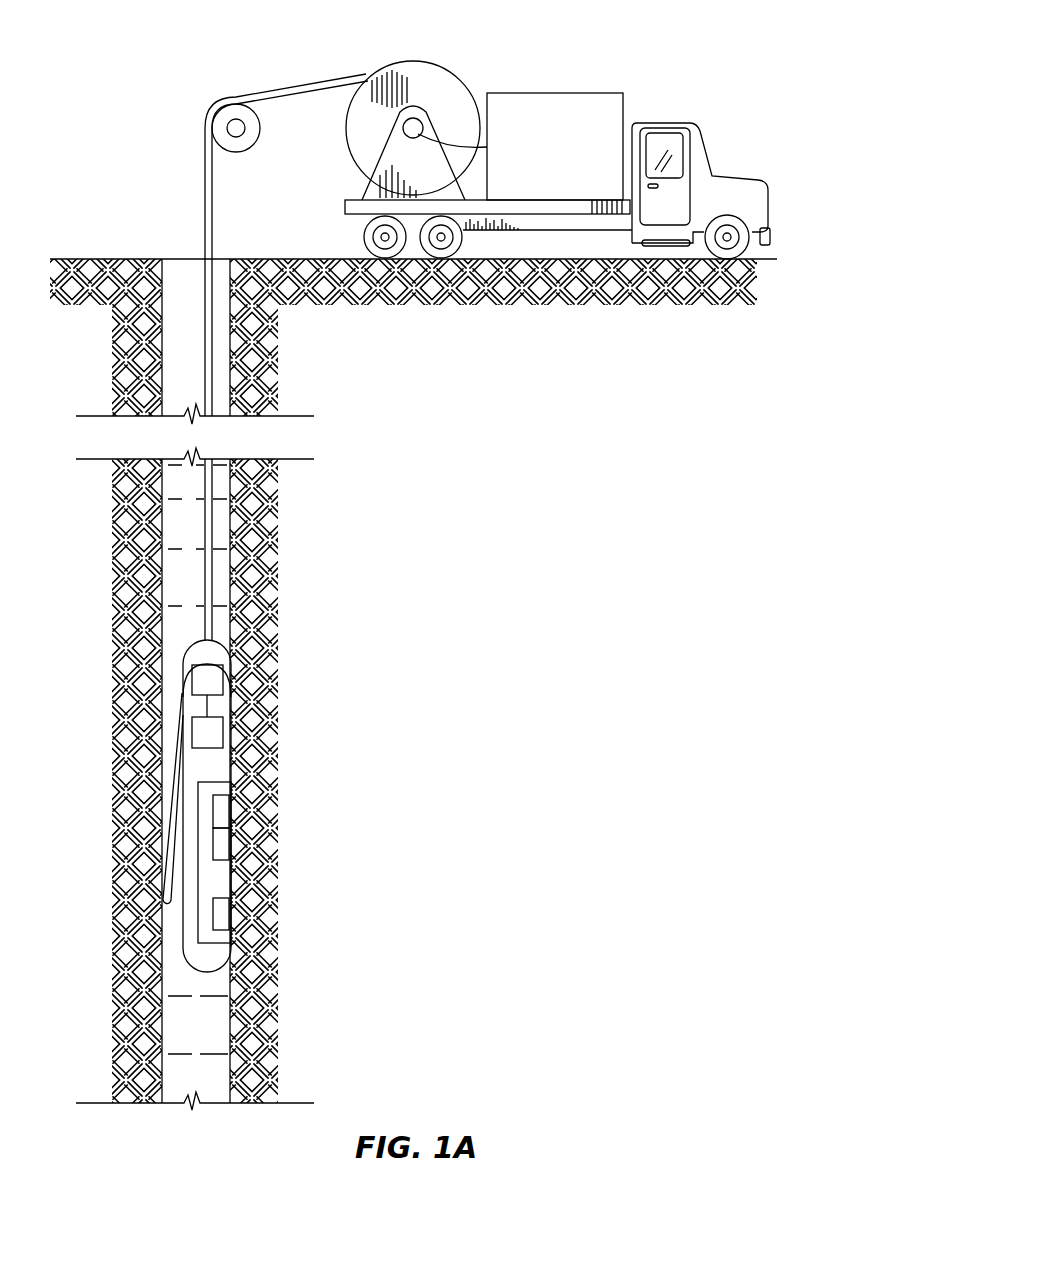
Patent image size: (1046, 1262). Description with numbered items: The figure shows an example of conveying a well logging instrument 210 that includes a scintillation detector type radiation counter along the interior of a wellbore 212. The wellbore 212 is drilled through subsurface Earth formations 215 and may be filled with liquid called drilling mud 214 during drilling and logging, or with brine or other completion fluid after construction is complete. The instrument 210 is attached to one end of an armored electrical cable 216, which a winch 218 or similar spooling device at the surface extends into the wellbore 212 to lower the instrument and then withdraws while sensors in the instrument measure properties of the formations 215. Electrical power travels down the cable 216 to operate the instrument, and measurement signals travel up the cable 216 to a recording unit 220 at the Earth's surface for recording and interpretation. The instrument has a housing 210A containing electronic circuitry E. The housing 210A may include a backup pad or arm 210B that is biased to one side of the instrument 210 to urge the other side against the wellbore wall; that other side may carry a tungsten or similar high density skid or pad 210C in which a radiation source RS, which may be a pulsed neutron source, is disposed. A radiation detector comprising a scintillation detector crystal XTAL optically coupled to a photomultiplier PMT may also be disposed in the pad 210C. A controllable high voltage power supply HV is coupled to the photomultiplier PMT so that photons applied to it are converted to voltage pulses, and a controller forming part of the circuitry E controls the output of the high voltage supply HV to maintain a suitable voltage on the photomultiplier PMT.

The well logging instrument 210 is at (183, 921).
The housing 210A is at (183, 697).
The backup pad or arm 210B is at (172, 813).
The skid or pad 210C is at (198, 876).
The wellbore 212 is at (183, 574).
The drilling mud 214 is at (183, 272).
The formations 215 is at (272, 988).
The armored electrical cable 216 is at (212, 517).
The winch 218 is at (413, 61).
The recording unit 220 is at (522, 93).
The electronic circuitry E is at (207, 681).
The high voltage power supply HV is at (207, 733).
The photomultiplier PMT is at (225, 810).
The scintillation detector crystal XTAL is at (225, 842).
The source radiation RS is at (222, 913).